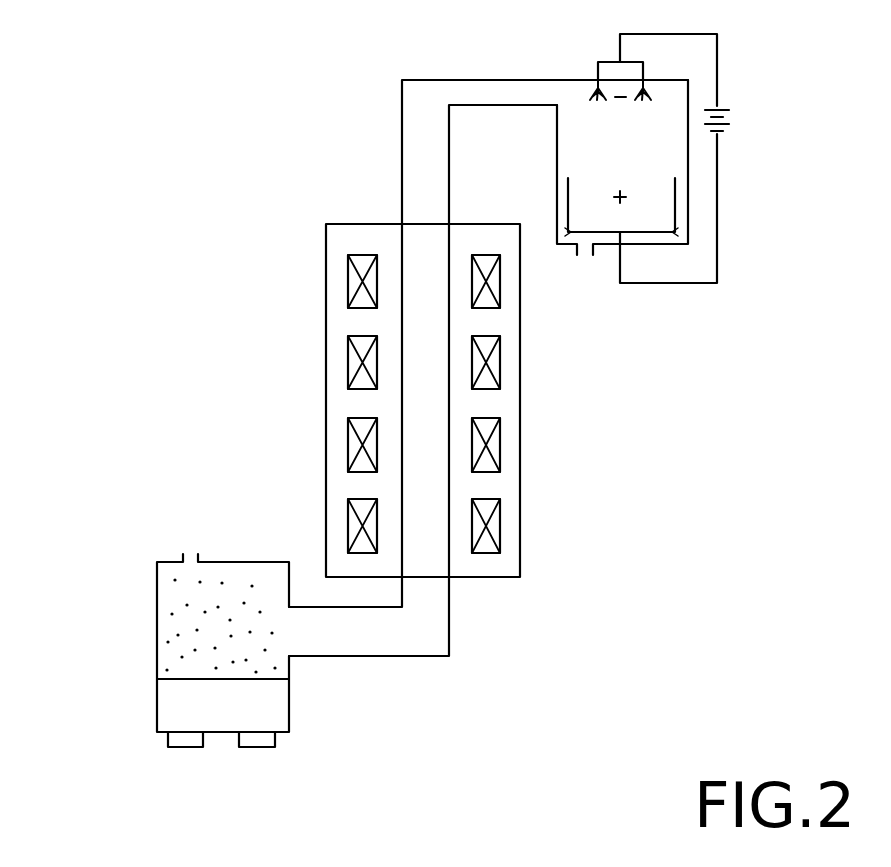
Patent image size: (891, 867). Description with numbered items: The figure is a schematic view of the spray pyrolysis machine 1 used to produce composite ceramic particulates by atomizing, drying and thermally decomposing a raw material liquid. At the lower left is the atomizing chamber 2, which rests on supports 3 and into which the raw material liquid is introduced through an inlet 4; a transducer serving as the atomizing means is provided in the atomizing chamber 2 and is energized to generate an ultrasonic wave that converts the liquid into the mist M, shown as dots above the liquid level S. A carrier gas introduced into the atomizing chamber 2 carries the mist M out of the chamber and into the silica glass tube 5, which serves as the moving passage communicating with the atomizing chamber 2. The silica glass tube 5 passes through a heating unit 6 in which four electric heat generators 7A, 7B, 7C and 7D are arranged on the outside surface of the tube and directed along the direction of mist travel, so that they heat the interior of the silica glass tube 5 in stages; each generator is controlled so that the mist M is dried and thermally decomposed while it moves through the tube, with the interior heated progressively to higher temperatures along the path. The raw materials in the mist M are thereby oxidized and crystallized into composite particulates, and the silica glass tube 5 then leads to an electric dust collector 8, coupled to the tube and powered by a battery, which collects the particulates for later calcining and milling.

The machine 1 is at (204, 247).
The atomizing chamber 2 is at (157, 582).
The transducer 3 is at (165, 742).
The inlet 4 is at (188, 548).
The silica glass tube 5 is at (450, 605).
The heating unit 6 is at (521, 325).
The electric heat generator 7A is at (500, 517).
The electric heat generator 7B is at (500, 452).
The electric heat generator 7C is at (500, 372).
The electric heat generator 7D is at (500, 287).
The electric dust collector 8 is at (688, 97).
The mist M is at (178, 632).
The solution S is at (167, 705).